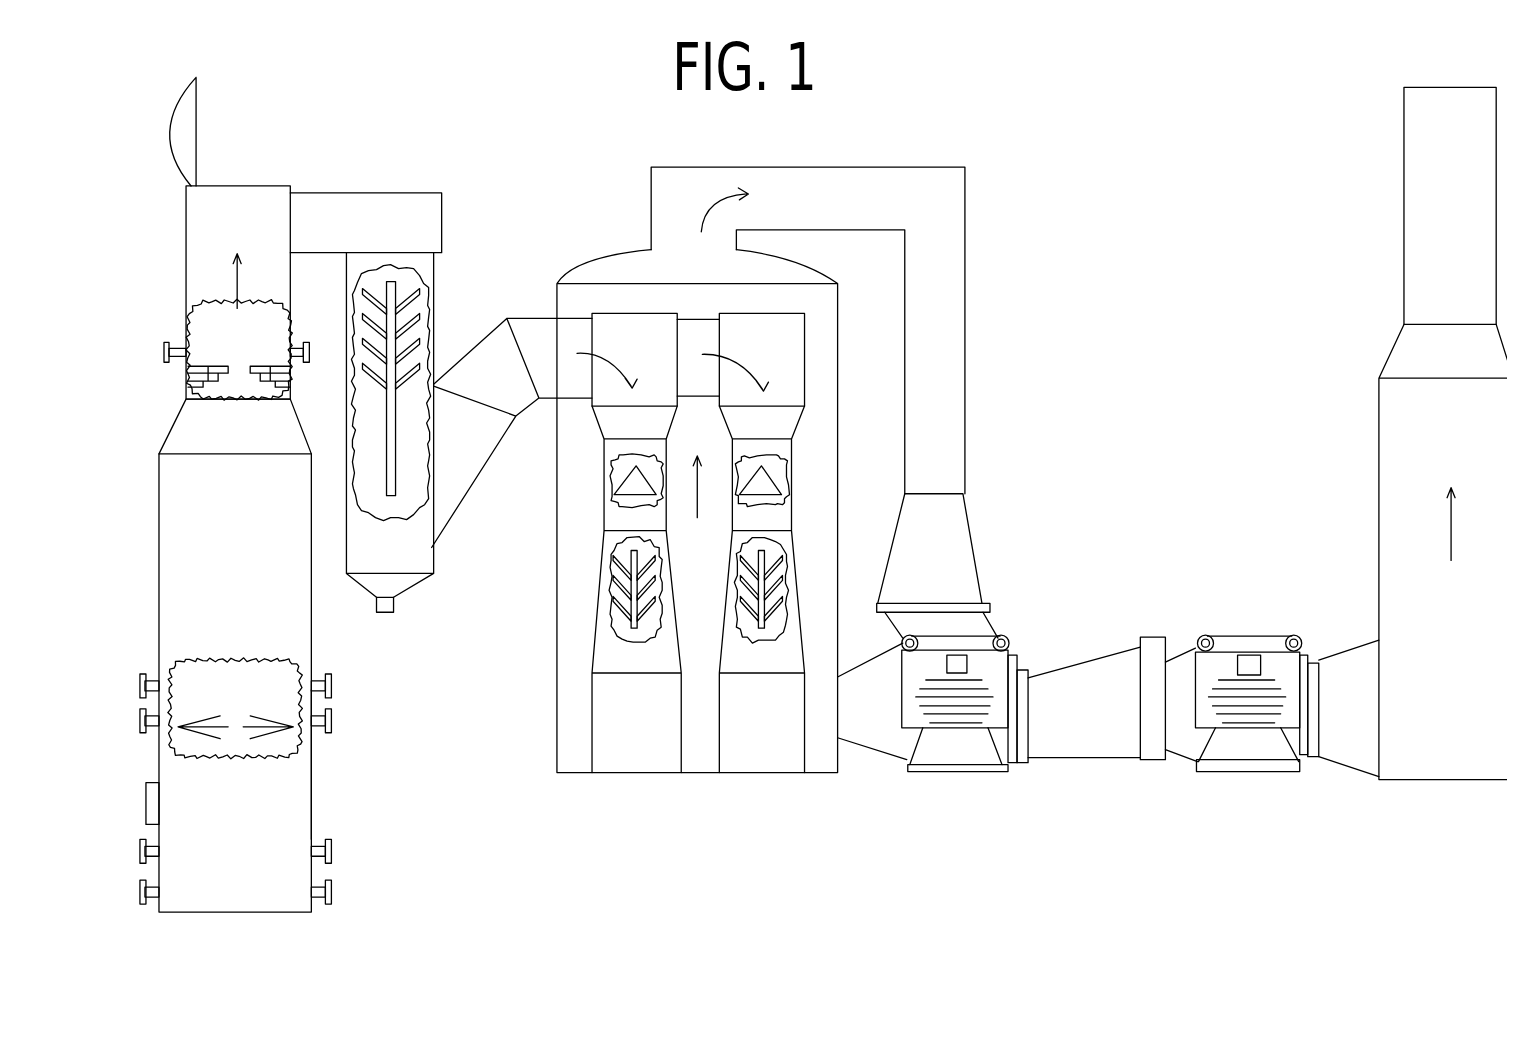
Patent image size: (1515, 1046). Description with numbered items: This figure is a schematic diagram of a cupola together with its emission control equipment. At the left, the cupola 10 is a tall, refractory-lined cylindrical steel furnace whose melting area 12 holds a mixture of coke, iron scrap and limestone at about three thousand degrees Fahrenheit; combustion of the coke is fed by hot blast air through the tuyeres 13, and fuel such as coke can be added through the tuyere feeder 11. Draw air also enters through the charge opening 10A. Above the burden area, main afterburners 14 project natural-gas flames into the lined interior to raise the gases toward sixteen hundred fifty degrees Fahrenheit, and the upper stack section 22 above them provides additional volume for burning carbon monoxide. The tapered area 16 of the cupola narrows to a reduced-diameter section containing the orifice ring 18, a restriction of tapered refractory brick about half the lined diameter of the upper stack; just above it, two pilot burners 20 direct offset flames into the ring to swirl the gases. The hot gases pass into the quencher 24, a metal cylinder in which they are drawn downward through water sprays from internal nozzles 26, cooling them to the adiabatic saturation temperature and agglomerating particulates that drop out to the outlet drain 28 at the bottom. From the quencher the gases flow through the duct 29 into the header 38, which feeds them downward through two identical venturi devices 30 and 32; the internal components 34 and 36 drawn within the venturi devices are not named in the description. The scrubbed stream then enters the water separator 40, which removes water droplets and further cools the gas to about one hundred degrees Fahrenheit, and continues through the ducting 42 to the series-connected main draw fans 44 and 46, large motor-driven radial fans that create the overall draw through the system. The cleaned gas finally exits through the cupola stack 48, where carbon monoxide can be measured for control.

The cupola 10 is at (313, 482).
The charge opening 10A is at (148, 806).
The tuyere feeder 11 is at (330, 838).
The melting area 12 is at (313, 765).
The tuyeres 13 is at (328, 883).
The main afterburners 14 is at (150, 735).
The tapered area 16 is at (172, 436).
The orifice ring 18 is at (193, 373).
The pilot burners 20 is at (170, 342).
The upper stack section 22 is at (188, 226).
The quencher 24 is at (435, 270).
The internal nozzles 26 is at (428, 337).
The outlet drain 28 is at (397, 603).
The duct 29 is at (472, 487).
The venturi device 30 is at (593, 712).
The venturi device 32 is at (805, 687).
The filter bag 34 is at (620, 590).
The cleaning nozzle 36 is at (612, 495).
The header 38 is at (690, 318).
The water separator 40 is at (838, 333).
The ducting 42 is at (963, 410).
The main draw fan 44 is at (1010, 653).
The main draw fan 46 is at (1303, 647).
The cupola stack 48 is at (1378, 405).